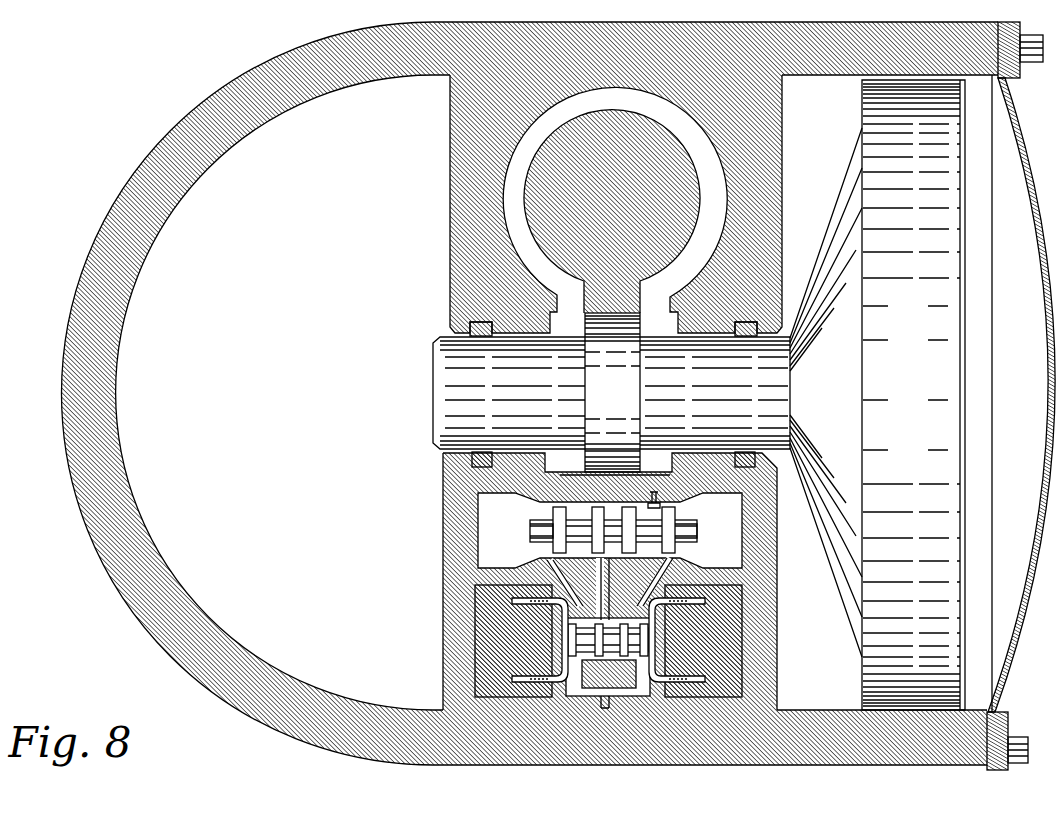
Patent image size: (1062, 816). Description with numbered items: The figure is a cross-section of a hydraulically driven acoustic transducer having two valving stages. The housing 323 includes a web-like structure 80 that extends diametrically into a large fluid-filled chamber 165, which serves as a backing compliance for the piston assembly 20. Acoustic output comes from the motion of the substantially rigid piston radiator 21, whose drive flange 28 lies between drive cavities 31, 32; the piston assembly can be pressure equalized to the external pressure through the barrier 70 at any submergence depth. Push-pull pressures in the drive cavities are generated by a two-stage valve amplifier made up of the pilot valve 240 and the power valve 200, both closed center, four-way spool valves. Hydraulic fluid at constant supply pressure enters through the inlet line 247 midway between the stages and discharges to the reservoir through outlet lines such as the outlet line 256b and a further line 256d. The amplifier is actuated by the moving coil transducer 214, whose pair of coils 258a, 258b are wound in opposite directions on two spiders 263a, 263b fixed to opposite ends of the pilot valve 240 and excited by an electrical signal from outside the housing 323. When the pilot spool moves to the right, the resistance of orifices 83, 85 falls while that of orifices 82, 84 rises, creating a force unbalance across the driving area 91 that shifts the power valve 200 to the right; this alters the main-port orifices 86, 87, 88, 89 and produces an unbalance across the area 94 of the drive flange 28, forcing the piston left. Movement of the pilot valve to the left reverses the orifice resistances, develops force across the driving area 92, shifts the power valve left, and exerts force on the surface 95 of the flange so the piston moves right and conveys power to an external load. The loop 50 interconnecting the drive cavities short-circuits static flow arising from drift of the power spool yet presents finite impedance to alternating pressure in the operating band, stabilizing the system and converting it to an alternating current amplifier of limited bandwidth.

The housing 323 is at (820, 30).
The fluid-filled chamber 165 is at (276, 400).
The web-like structure 80 is at (452, 218).
The loop 50 is at (683, 135).
The piston assembly 20 is at (787, 326).
The piston radiator 21 is at (945, 276).
The barrier 70 is at (1045, 358).
The surface of drive flange 95 is at (586, 373).
The drive flange 28 is at (601, 401).
The area of drive flange 94 is at (642, 456).
The drive cavity 32 is at (557, 467).
The drive cavity 31 is at (649, 469).
The outlet line 256b is at (610, 581).
The orifice 87 is at (660, 497).
The orifice 86 is at (661, 505).
The driving area 91 is at (698, 513).
The driving area 92 is at (540, 547).
The orifice 89 is at (575, 532).
The orifice 88 is at (613, 530).
The power valve 200 is at (649, 532).
The inlet line 247 is at (618, 570).
The orifice 84 is at (603, 614).
The orifice 83 is at (615, 614).
The orifice 85 is at (588, 624).
The orifice 82 is at (634, 624).
The pilot valve 240 is at (608, 657).
The valve block 256d is at (610, 698).
The coil 258b is at (521, 641).
The coil 258a is at (695, 641).
The spider 263b is at (521, 662).
The spider 263a is at (700, 662).
The moving coil transducer 214 is at (500, 682).